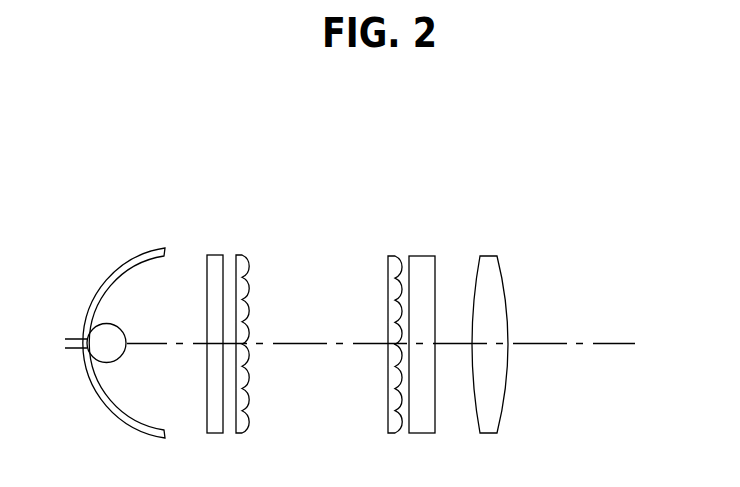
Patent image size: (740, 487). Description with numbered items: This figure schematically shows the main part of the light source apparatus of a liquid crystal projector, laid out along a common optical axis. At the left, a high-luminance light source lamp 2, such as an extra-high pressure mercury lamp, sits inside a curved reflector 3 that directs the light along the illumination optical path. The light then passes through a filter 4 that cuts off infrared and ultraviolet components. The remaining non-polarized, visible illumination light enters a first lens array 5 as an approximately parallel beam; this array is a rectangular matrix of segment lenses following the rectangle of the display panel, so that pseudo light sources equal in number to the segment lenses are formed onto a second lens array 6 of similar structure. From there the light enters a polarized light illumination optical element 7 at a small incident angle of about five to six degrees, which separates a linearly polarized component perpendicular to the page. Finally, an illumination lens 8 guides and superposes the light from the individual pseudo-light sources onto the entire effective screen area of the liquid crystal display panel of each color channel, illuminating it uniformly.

The light source lamp 2 is at (117, 359).
The reflector 3 is at (109, 265).
The filter 4 is at (220, 255).
The first lens array 5 is at (240, 255).
The second lens array 6 is at (393, 256).
The polarized light illumination optical element 7 is at (425, 256).
The illumination lens 8 is at (487, 256).